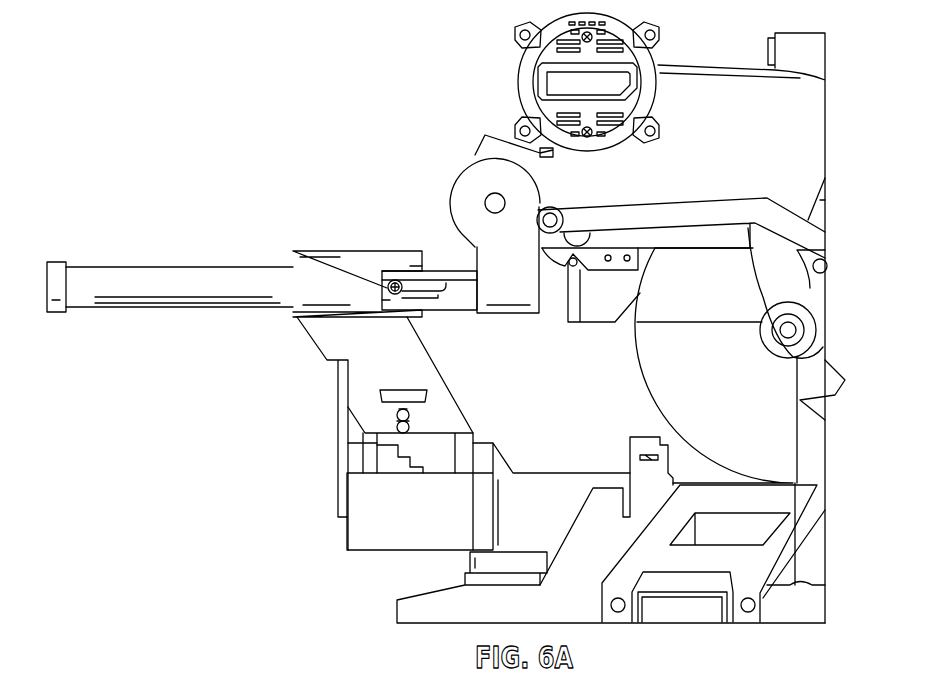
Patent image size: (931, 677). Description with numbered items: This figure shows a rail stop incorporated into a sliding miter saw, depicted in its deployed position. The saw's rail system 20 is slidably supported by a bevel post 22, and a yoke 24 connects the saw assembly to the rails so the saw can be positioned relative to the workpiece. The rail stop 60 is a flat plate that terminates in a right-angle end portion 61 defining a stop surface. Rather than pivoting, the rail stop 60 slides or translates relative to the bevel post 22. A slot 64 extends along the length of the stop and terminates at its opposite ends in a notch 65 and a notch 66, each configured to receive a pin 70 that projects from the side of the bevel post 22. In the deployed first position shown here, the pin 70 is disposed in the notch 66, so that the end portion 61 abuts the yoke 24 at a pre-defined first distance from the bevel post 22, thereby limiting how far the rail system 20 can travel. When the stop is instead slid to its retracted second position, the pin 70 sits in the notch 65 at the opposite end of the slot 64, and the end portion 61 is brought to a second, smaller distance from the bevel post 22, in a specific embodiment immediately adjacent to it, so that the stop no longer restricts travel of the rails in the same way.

The rail system 20 is at (148, 286).
The bevel post 22 is at (330, 345).
The yoke 24 is at (470, 182).
The rail stop 60 is at (410, 262).
The end portion 61 is at (478, 288).
The slot 64 is at (432, 300).
The notch 65 is at (448, 290).
The notch 66 is at (388, 294).
The pin 70 is at (393, 280).